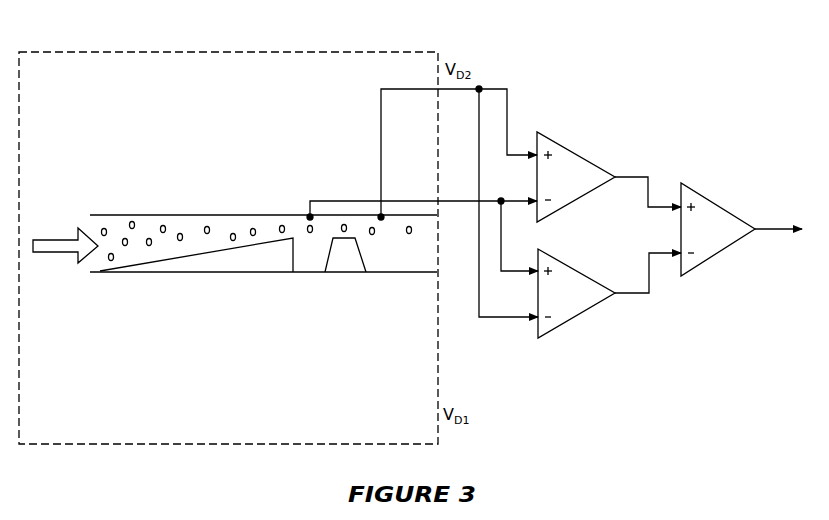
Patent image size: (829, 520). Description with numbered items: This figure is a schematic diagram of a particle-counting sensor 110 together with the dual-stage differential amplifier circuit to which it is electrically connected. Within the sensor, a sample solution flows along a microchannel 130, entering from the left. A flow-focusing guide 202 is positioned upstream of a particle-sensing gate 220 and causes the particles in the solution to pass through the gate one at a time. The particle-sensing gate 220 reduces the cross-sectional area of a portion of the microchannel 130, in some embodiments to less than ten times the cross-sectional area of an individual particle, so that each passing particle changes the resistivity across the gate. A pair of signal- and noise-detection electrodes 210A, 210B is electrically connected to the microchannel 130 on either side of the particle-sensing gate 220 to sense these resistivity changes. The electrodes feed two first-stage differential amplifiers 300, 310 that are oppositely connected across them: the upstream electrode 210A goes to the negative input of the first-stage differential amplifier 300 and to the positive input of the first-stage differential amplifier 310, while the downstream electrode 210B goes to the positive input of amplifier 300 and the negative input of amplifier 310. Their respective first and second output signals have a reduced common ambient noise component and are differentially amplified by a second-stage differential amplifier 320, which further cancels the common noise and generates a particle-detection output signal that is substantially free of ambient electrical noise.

The particle-counting sensor 110 is at (228, 231).
The microchannel 130 is at (189, 273).
The flow-focusing guide 202 is at (263, 259).
The signal- and noise-detection electrode 210A is at (374, 132).
The signal- and noise-detection electrode 210B is at (301, 201).
The particle-sensing gate 220 is at (340, 273).
The first-stage differential amplifier 300 is at (609, 171).
The first-stage differential amplifier 310 is at (609, 300).
The second-stage differential amplifier 320 is at (741, 225).